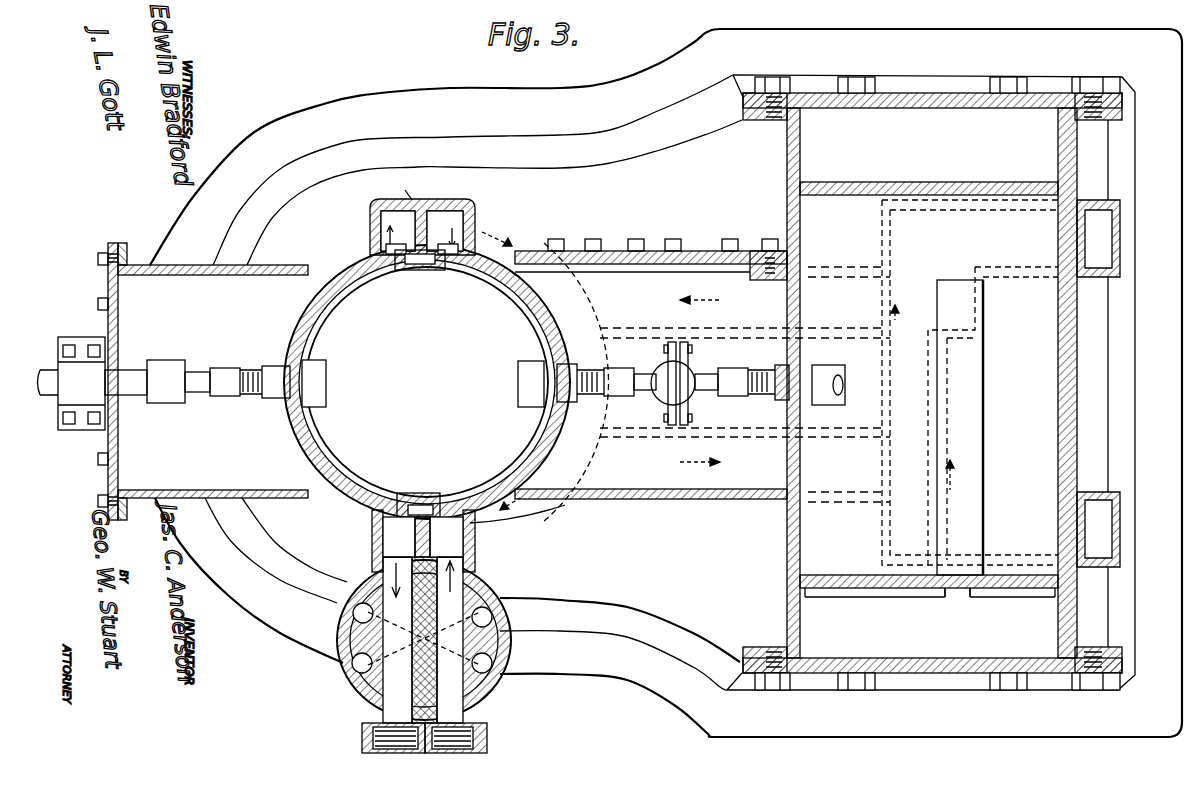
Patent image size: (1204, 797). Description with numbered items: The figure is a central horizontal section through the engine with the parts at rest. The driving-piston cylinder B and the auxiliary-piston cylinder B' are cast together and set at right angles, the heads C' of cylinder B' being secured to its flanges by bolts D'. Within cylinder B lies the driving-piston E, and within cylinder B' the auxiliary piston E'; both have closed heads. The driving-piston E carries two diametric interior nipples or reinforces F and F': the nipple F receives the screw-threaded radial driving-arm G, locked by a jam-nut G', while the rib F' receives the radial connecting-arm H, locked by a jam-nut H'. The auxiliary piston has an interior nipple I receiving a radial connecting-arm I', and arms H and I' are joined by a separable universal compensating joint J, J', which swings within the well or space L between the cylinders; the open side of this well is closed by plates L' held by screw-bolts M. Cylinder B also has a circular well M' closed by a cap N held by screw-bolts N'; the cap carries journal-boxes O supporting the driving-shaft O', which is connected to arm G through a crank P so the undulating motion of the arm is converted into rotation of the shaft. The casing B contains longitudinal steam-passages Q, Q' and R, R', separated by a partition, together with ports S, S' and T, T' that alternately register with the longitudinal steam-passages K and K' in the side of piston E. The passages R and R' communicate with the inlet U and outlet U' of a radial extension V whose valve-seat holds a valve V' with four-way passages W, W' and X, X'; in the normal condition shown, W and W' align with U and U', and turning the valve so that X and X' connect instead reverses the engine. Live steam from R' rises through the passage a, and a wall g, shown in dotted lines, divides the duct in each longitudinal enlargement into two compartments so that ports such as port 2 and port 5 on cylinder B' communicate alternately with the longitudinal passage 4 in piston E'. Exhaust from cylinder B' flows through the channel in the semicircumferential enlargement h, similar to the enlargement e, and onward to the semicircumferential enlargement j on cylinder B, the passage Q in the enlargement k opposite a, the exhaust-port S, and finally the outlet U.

The cylinder of the driving-piston B is at (414, 374).
The cylinder of the auxiliary piston B' is at (926, 383).
The heads of the cylinder B' C' is at (932, 381).
The bolts D' is at (937, 383).
The driving-piston E is at (427, 382).
The auxiliary piston E' is at (929, 370).
The interior nipple or reinforce F is at (327, 383).
The interior nipple or rib F' is at (512, 384).
The radial driving-arm G is at (236, 368).
The jam-nut G' is at (265, 399).
The radial connecting-arm H is at (630, 396).
The jam-nut H' is at (580, 369).
The interior nipple or reinforce I is at (828, 371).
The connecting radial arm I' is at (752, 395).
The universal compensating joint J is at (665, 380).
The universal compensating joint J' is at (721, 364).
The longitudinal steam-passage of piston E K is at (420, 278).
The longitudinal steam-passage of piston E K' is at (418, 491).
The well or space L is at (651, 481).
The plates L' is at (651, 250).
The screw-bolts M is at (663, 242).
The circular well M' is at (213, 381).
The cap N is at (96, 381).
The screw-bolts N' is at (92, 380).
The journal-boxes O is at (72, 397).
The driving-shaft O' is at (132, 363).
The crank P is at (178, 368).
The longitudinal steam-passage Q is at (398, 231).
The longitudinal steam-passage Q' is at (445, 231).
The longitudinal steam-passage R is at (399, 537).
The longitudinal steam-passage R' is at (446, 537).
The port S is at (390, 274).
The port S' is at (455, 273).
The port T is at (385, 520).
The port T' is at (467, 520).
The inlet passage U is at (393, 753).
The outlet passage U' is at (457, 753).
The radial extension V is at (373, 551).
The valve V' is at (480, 575).
The steam-passage of valve W is at (397, 640).
The steam-passage of valve W' is at (450, 640).
The steam-passage of valve X is at (422, 640).
The steam-passage of valve X' is at (430, 625).
The vertical passage a is at (372, 524).
The semicircumferential enlargement e is at (1098, 238).
The wall g is at (492, 545).
The semicircumferential enlargement h is at (1090, 492).
The semicircumferential enlargement j is at (528, 248).
The enlargement k is at (452, 200).
The port 2 is at (960, 427).
The longitudinal passage 4 is at (960, 598).
The port 5 is at (970, 382).